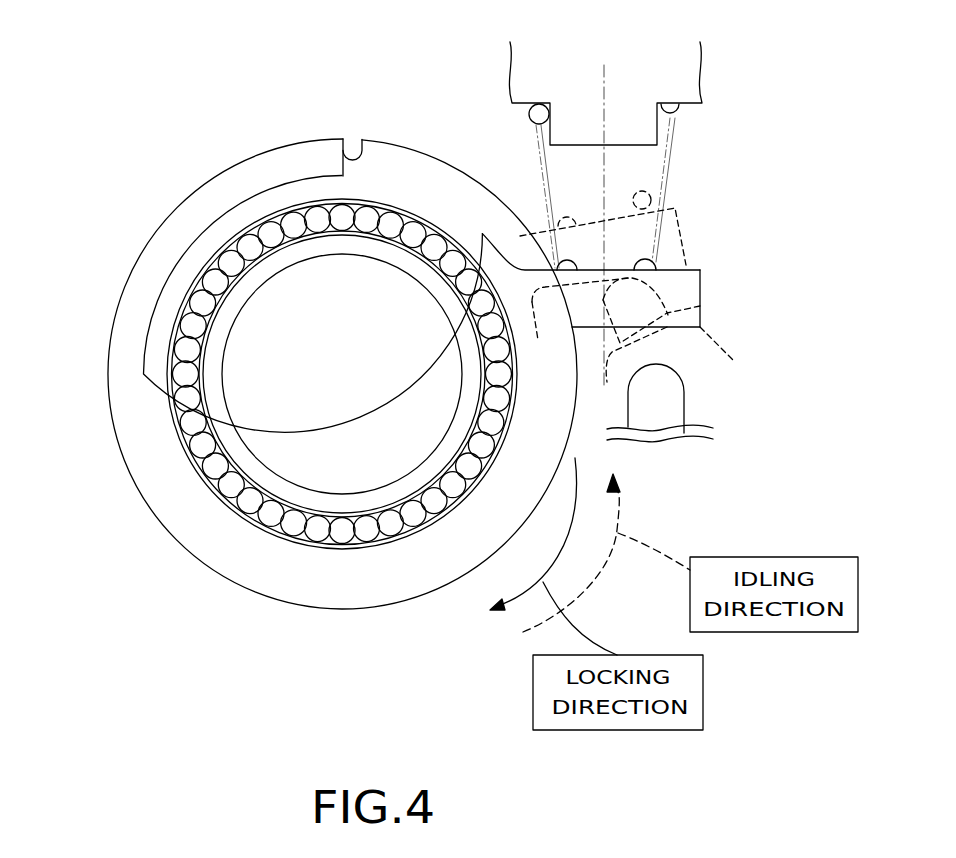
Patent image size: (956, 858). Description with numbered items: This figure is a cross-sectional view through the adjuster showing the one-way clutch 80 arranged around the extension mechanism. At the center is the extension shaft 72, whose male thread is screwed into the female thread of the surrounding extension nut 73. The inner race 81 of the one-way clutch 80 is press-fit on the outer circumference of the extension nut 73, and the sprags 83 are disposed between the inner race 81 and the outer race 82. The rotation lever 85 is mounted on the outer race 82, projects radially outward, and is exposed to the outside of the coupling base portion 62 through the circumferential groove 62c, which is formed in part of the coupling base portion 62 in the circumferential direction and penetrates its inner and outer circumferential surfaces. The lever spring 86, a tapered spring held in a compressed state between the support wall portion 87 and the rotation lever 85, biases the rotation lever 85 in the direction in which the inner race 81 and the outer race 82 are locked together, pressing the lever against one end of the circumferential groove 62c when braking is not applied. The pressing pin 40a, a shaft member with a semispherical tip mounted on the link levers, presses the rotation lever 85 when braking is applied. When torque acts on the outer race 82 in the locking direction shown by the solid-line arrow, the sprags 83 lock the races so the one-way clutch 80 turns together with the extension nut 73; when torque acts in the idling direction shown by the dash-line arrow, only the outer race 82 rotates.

The one-way clutch 80 is at (194, 253).
The coupling base portion 62 is at (315, 138).
The circumferential groove 62c is at (360, 138).
The extension shaft 72 is at (295, 300).
The extension nut 73 is at (268, 273).
The inner race 81 is at (330, 543).
The outer race 82 is at (290, 547).
The sprags 83 is at (392, 534).
The rotation lever 85 is at (703, 292).
The lever spring 86 is at (648, 262).
The support wall portion 87 is at (662, 90).
The pressing pin 40a is at (684, 381).